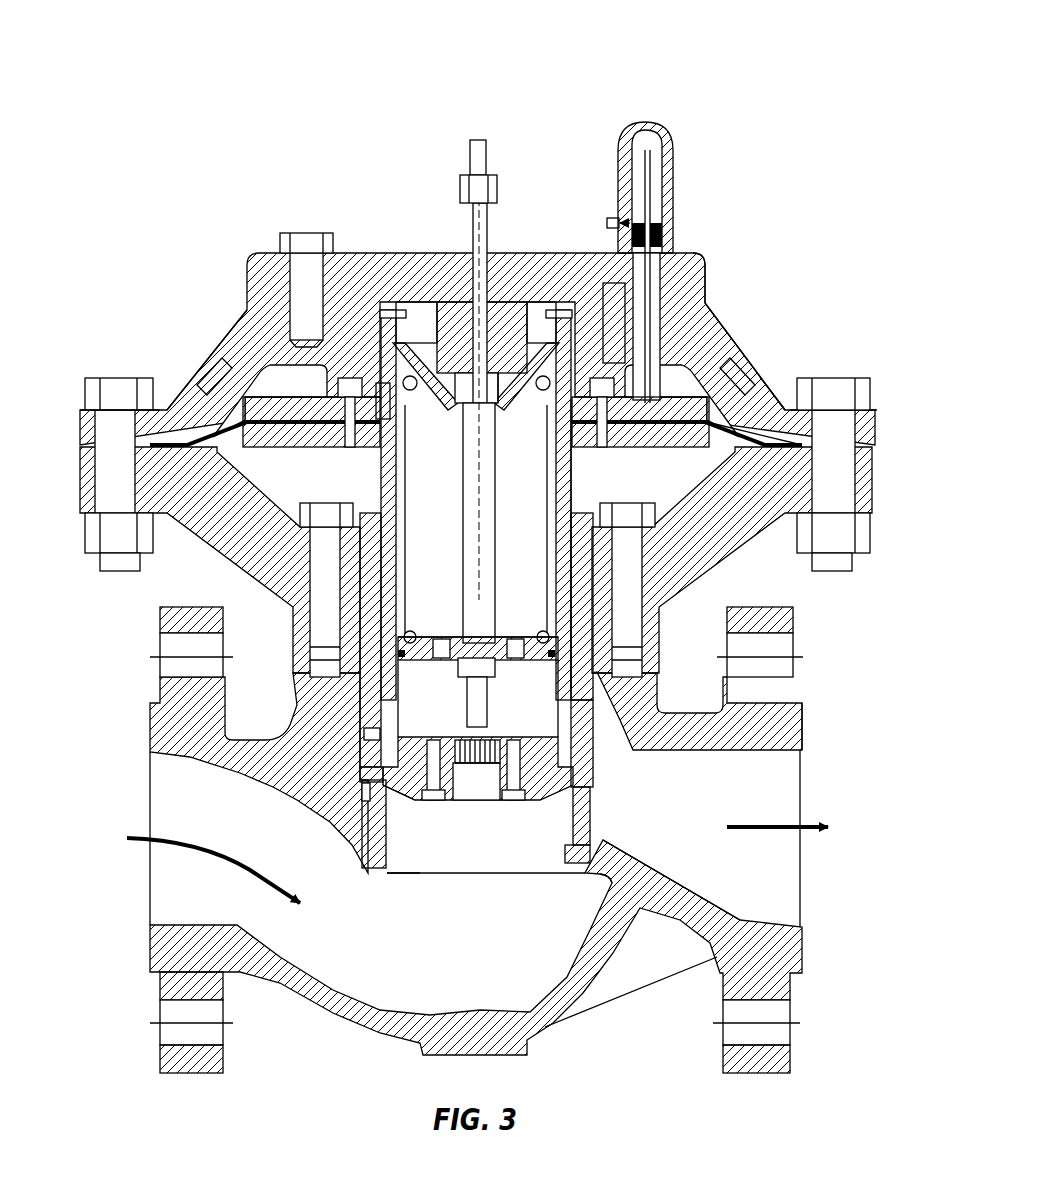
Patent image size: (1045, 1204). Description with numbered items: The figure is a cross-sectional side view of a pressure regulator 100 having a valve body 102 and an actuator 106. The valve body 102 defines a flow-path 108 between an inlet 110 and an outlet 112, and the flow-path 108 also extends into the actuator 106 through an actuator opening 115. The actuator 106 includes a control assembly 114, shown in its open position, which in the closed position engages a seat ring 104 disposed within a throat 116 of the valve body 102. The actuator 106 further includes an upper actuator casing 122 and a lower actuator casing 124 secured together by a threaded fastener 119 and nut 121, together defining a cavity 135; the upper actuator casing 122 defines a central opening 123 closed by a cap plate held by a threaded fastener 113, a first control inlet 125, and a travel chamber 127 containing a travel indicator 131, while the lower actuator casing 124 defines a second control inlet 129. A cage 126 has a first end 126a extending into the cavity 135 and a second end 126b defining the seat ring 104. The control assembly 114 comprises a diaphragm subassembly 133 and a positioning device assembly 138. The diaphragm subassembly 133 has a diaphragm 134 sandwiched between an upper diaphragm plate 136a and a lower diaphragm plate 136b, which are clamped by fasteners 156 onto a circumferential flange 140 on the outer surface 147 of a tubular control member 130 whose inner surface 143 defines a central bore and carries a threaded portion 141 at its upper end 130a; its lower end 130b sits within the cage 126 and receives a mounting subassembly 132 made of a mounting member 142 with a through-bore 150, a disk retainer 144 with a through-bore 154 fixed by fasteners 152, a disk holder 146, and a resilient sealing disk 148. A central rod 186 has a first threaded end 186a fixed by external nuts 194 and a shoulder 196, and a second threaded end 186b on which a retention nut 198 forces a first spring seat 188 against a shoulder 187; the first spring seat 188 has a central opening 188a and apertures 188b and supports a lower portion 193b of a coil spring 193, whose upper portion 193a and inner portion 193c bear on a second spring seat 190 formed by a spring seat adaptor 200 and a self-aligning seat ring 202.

The pressure regulator 100 is at (552, 46).
The valve body 102 is at (146, 699).
The seat ring 104 is at (556, 870).
The actuator 106 is at (178, 373).
The flow-path 108 is at (185, 840).
The inlet 110 is at (175, 925).
The outlet 112 is at (803, 930).
The threaded fastener 113 is at (290, 238).
The control assembly 114 is at (692, 452).
The actuator opening 115 is at (650, 670).
The throat 116 is at (380, 870).
The threaded fastener 119 is at (862, 382).
The nut 121 is at (92, 550).
The upper actuator casing 122 is at (720, 337).
The central opening 123 is at (352, 290).
The lower actuator casing 124 is at (232, 540).
The first control inlet 125 is at (215, 360).
The cage 126 is at (594, 740).
The first end 126a is at (364, 514).
The second end 126b is at (395, 868).
The travel chamber 127 is at (700, 275).
The second control inlet 129 is at (737, 532).
The tubular control member 130 is at (400, 552).
The upper end 130a is at (390, 318).
The lower end 130b is at (592, 777).
The travel indicator 131 is at (660, 172).
The mounting subassembly 132 is at (540, 800).
The diaphragm subassembly 133 is at (676, 376).
The diaphragm 134 is at (775, 380).
The cavity 135 is at (295, 473).
The upper diaphragm plate 136a is at (702, 405).
The lower diaphragm plate 136b is at (280, 450).
The positioning device assembly 138 is at (577, 490).
The circumferential flange 140 is at (392, 405).
The threaded portion 141 is at (432, 335).
The mounting member 142 is at (364, 736).
The inner surface 143 is at (392, 490).
The disk retainer 144 is at (415, 802).
The disk holder 146 is at (360, 772).
The outer surface 147 is at (572, 458).
The sealing disk 148 is at (362, 792).
The through-bore 150 is at (500, 740).
The fasteners 152 is at (433, 802).
The through-bore 154 is at (478, 800).
The fasteners 156 is at (338, 387).
The central rod 186 is at (463, 486).
The first threaded end 186a is at (497, 178).
The second threaded end 186b is at (488, 706).
The shoulder 187 is at (468, 640).
The first spring seat 188 is at (505, 632).
The central opening 188a is at (492, 630).
The apertures 188b is at (438, 660).
The second spring seat 190 is at (449, 412).
The coil spring 193 is at (547, 470).
The upper portion 193a is at (592, 300).
The lower portion 193b is at (415, 634).
The inner portion 193c is at (413, 375).
The external nuts 194 is at (483, 140).
The shoulder 196 is at (500, 300).
The retention nut 198 is at (465, 677).
The spring seat adaptor 200 is at (520, 300).
The seat ring 202 is at (537, 400).